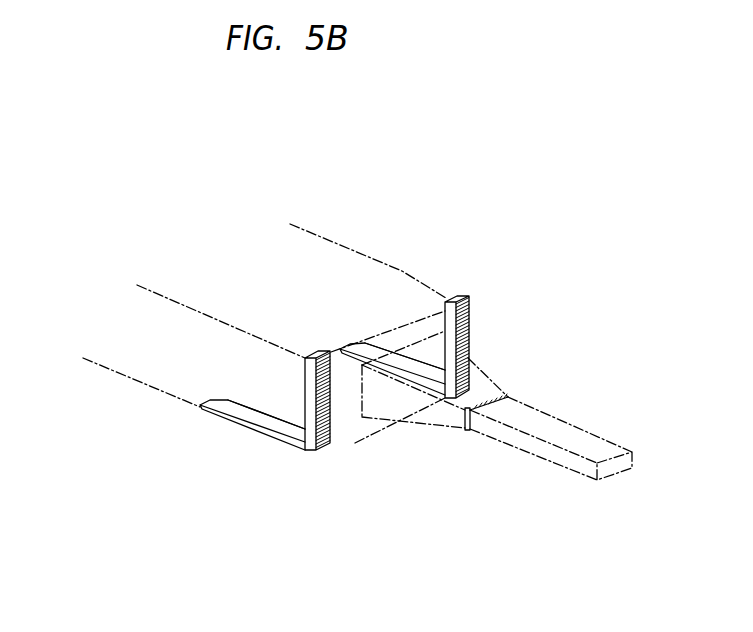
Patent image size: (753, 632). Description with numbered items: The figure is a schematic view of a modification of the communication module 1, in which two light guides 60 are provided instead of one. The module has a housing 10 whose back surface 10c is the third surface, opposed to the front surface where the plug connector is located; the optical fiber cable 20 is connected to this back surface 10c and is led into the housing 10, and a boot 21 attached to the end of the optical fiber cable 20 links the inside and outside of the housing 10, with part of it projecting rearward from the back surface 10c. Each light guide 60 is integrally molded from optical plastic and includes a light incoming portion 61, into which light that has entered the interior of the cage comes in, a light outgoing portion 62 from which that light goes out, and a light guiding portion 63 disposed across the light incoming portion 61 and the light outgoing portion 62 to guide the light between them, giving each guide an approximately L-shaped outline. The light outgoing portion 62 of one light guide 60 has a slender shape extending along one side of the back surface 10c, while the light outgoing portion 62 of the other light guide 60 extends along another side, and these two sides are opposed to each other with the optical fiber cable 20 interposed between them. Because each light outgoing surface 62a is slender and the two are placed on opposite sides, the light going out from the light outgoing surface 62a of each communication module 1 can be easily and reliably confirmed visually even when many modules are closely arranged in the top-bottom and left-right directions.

The communication module 1 is at (214, 243).
The housing 10 is at (402, 268).
The back surface 10c is at (347, 427).
The optical fiber cable 20 is at (603, 478).
The boot 21 is at (471, 430).
The light guide 60 is at (254, 434).
The light incoming portion 61 is at (213, 410).
The light outgoing portion 62 is at (328, 449).
The light outgoing surface 62a is at (392, 373).
The light guiding portion 63 is at (251, 410).